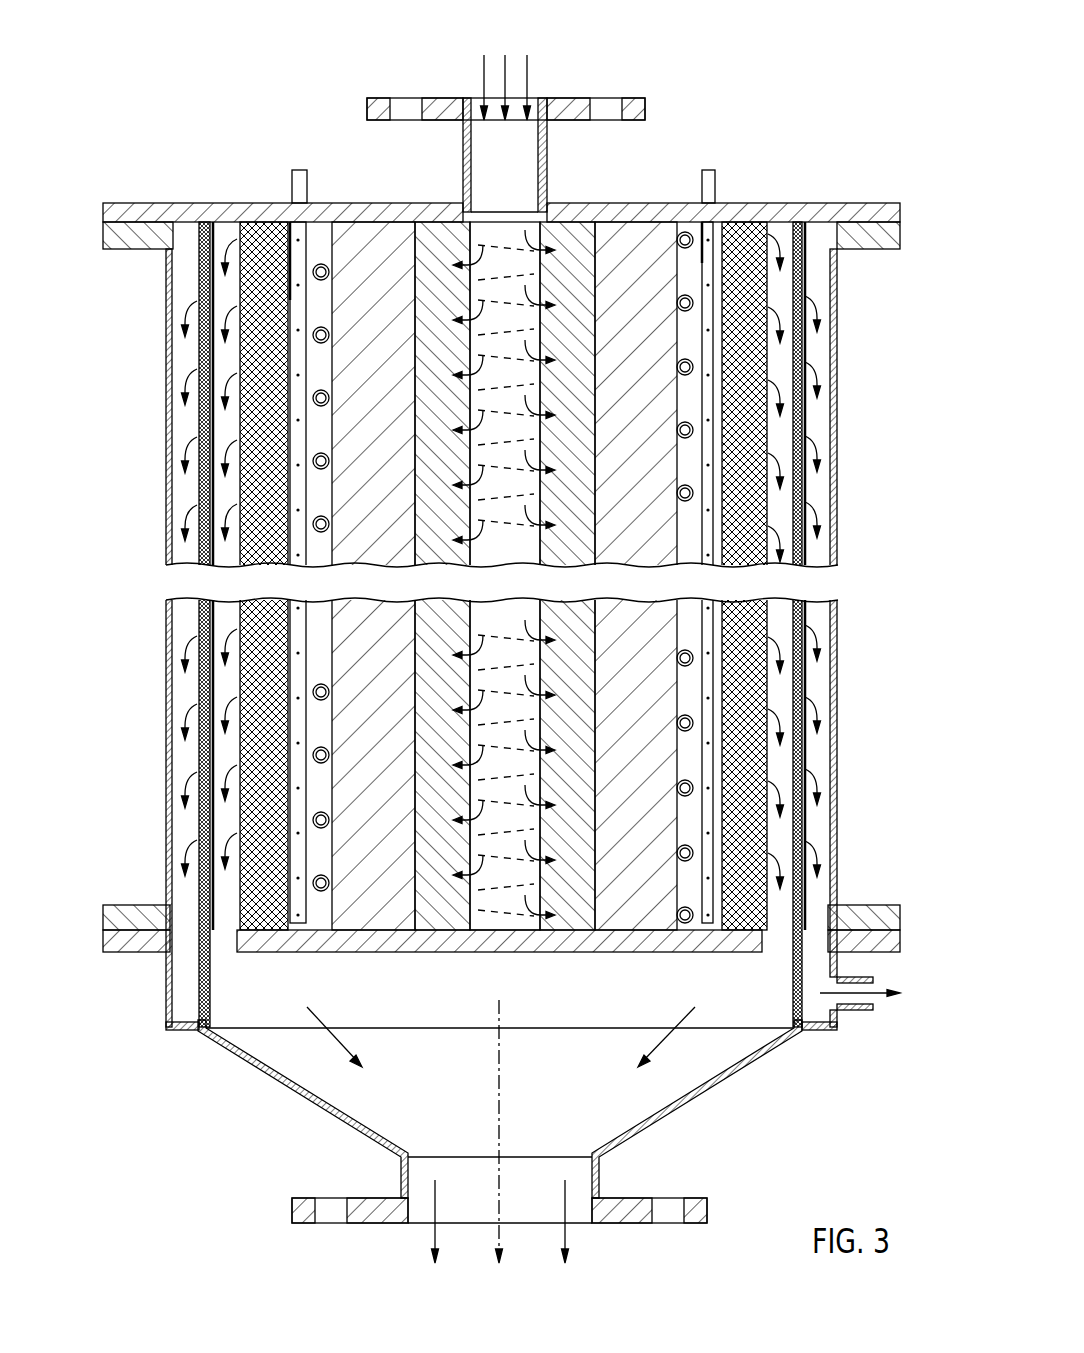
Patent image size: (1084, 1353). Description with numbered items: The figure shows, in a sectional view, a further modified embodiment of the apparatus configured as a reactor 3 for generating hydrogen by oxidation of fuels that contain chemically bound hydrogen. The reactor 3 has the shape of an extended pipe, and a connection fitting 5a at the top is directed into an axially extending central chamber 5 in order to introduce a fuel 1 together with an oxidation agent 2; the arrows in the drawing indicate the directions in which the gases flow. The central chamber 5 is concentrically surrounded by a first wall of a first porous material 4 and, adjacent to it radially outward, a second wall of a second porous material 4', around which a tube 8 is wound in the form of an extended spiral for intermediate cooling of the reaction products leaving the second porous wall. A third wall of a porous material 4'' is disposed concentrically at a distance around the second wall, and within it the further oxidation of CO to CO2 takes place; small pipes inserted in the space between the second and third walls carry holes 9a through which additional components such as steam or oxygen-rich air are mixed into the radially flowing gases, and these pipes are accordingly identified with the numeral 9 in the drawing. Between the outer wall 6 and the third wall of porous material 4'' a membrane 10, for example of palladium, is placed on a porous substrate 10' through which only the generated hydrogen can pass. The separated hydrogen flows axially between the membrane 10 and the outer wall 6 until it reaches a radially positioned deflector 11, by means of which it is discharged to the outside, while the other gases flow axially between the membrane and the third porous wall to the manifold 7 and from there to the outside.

The fuel 1 is at (505, 58).
The oxidation agent 2 is at (527, 63).
The reactor 3 is at (765, 125).
The first porous material 4 is at (567, 540).
The second porous material 4' is at (636, 540).
The third porous material 4'' is at (504, 539).
The central chamber 5 is at (500, 233).
The connection fitting 5a is at (460, 157).
The outer wall 6 is at (836, 338).
The manifold 7 is at (676, 1087).
The tube 8 is at (684, 222).
The perforated plate 9 is at (707, 757).
The holes 9a is at (298, 640).
The membrane 10 is at (557, 576).
The porous substrate 10' is at (549, 624).
The deflector 11 is at (857, 1012).